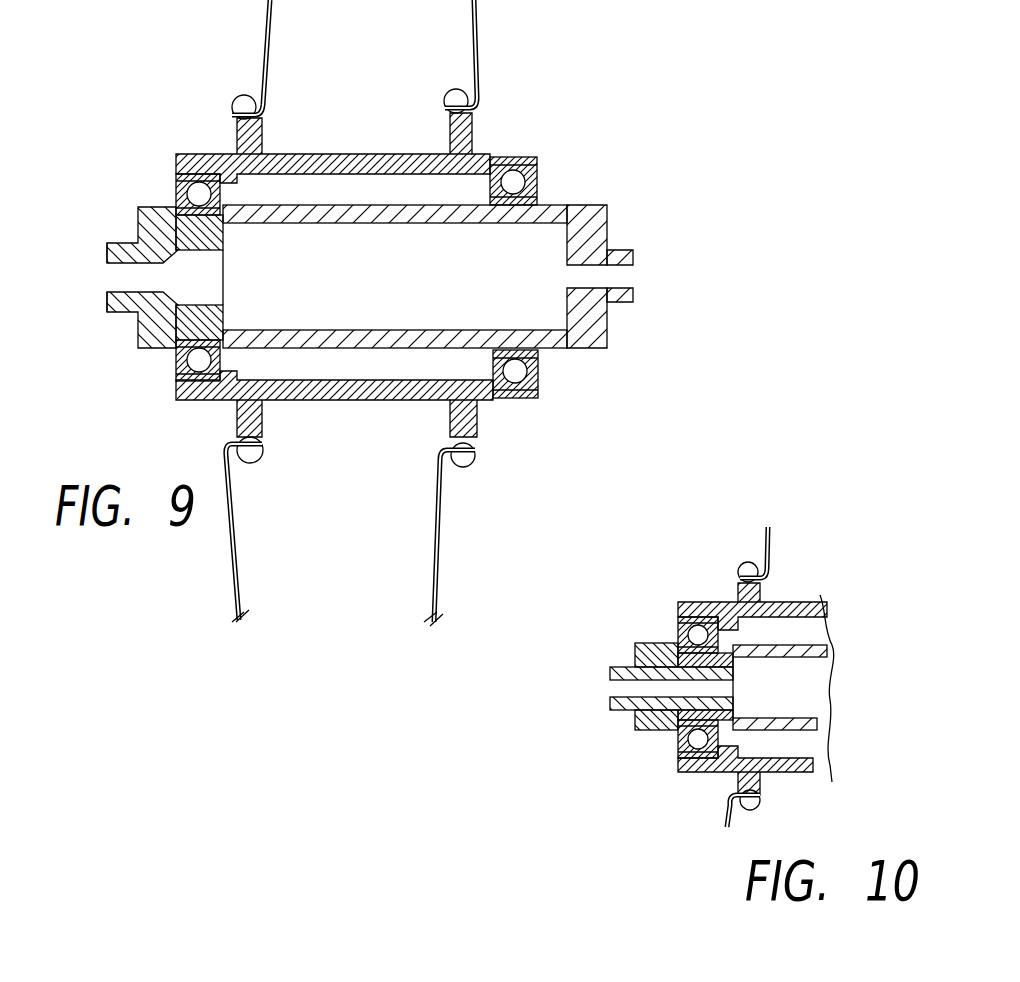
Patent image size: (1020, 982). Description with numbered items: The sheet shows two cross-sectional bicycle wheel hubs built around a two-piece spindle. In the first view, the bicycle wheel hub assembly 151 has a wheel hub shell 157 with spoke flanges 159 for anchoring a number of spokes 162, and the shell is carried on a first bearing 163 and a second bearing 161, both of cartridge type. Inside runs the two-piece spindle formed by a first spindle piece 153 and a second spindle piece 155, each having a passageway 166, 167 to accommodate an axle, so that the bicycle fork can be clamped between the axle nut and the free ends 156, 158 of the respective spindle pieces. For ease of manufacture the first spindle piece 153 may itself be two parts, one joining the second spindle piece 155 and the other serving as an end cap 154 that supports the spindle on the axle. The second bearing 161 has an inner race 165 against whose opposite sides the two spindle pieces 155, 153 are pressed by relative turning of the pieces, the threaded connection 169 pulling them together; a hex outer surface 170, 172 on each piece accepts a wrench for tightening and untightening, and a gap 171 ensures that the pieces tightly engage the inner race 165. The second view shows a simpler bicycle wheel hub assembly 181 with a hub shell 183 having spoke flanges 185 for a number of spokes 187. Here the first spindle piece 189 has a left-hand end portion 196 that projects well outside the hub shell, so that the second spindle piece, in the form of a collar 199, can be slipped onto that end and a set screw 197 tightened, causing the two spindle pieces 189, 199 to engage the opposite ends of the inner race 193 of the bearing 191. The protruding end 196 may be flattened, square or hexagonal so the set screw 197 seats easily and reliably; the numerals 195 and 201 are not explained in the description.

In FIG. 9, the bicycle wheel hub assembly 151 is at (506, 134).
In FIG. 9, the first spindle piece 153 is at (575, 205).
In FIG. 9, the end cap 154 is at (603, 232).
In FIG. 9, the second spindle piece 155 is at (157, 207).
In FIG. 9, the free end 156 is at (635, 255).
In FIG. 9, the wheel hub shell 157 is at (323, 155).
In FIG. 9, the free end 158 is at (105, 250).
In FIG. 9, the spoke flanges 159 is at (262, 133).
In FIG. 9, the second bearing 161 is at (175, 175).
In FIG. 9, the spokes 162 is at (278, 43).
In FIG. 9, the first bearing 163 is at (538, 167).
In FIG. 9, the inner race 165 is at (223, 210).
In FIG. 9, the passageway 166 is at (592, 277).
In FIG. 9, the passageway 167 is at (200, 277).
In FIG. 9, the threaded connection 169 is at (216, 310).
In FIG. 9, the hex outer surface 170 is at (620, 302).
In FIG. 9, the gap 171 is at (175, 322).
In FIG. 9, the hex outer surface 172 is at (113, 313).
In FIG. 10, the bicycle wheel hub assembly 181 is at (703, 596).
In FIG. 10, the hub shell 183 is at (802, 600).
In FIG. 10, the spoke flanges 185 is at (767, 580).
In FIG. 10, the spokes 187 is at (772, 528).
In FIG. 10, the first spindle piece 189 is at (755, 655).
In FIG. 10, the bearing 191 is at (677, 617).
In FIG. 10, the inner race 193 is at (727, 650).
In FIG. 10, the pipe 195 is at (612, 672).
In FIG. 10, the left-hand end portion 196 is at (617, 708).
In FIG. 10, the set screw 197 is at (650, 650).
In FIG. 10, the collar 199 is at (635, 730).
In FIG. 10, the hub 201 is at (717, 702).